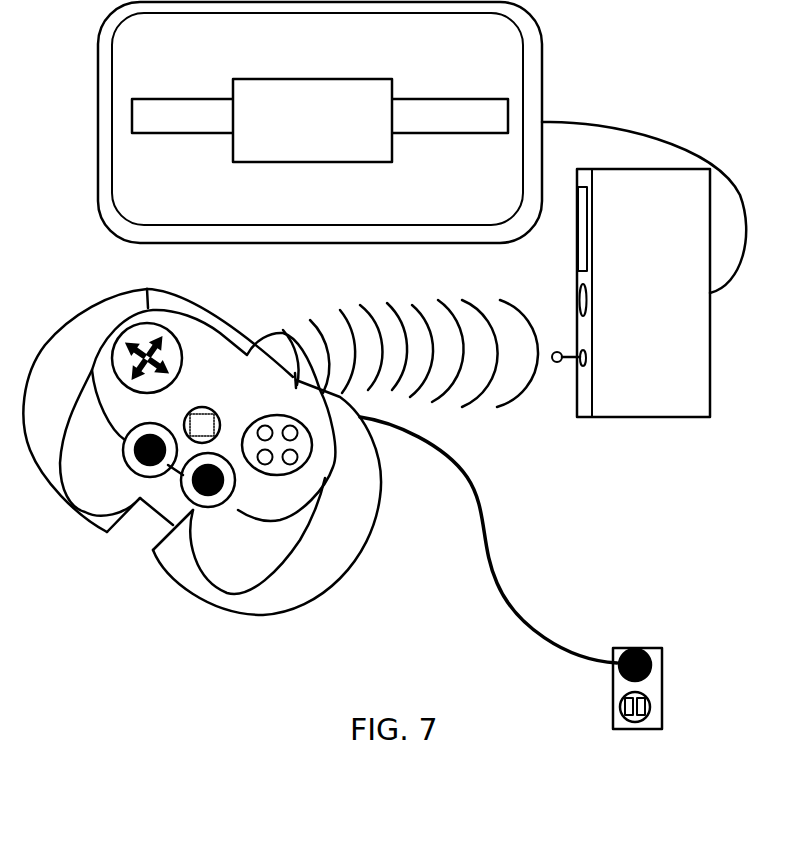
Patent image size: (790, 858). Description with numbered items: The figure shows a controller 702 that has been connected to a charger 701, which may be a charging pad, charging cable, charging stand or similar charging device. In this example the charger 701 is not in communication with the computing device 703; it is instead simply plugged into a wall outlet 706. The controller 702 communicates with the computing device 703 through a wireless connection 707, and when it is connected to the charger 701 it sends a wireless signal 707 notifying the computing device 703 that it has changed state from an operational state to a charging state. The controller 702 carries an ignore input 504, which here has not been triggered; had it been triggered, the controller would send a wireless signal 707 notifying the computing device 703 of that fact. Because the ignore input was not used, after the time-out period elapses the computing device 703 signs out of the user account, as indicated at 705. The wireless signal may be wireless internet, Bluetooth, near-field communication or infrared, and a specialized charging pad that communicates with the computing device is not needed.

The sign-in button 504 is at (203, 407).
The charger 701 is at (210, 307).
The controller 702 is at (181, 289).
The computing device 703 is at (667, 225).
The signed out indication 705 is at (393, 78).
The wall outlet 706 is at (662, 650).
The wireless connection 707 is at (413, 303).